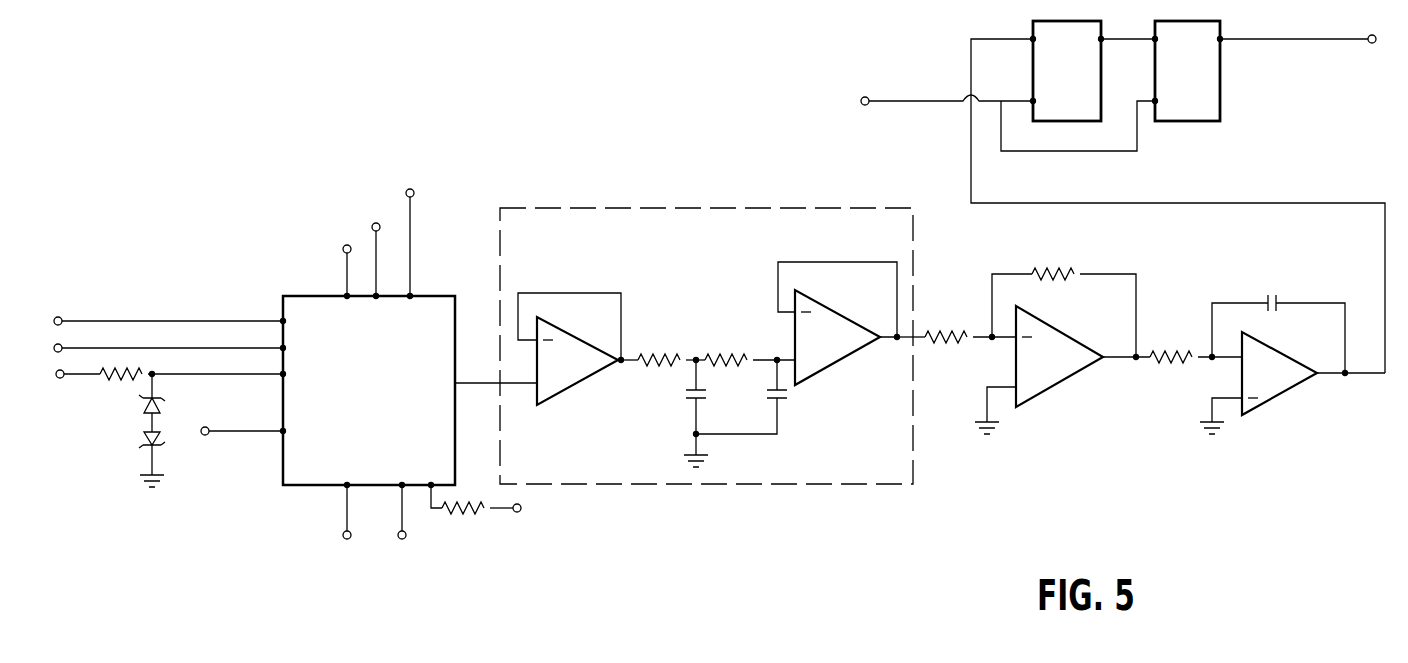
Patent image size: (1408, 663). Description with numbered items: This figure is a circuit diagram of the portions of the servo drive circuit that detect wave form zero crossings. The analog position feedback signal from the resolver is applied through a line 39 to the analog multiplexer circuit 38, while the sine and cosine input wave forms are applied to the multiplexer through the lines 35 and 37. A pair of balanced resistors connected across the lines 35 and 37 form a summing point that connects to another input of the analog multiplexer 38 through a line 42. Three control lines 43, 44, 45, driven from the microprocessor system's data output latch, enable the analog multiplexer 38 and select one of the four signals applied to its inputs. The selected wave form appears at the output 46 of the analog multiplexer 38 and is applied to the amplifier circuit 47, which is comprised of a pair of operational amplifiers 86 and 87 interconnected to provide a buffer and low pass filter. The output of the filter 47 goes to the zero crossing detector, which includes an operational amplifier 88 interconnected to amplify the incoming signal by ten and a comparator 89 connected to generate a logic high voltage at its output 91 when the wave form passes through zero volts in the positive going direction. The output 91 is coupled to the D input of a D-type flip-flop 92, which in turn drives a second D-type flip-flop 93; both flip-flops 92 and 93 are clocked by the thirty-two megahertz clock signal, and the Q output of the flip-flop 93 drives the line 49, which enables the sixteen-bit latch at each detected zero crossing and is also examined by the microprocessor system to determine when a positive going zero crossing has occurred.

The line 35 is at (57, 317).
The line 37 is at (55, 350).
The analog multiplexer circuit 38 is at (302, 492).
The line 39 is at (63, 376).
The line 42 is at (205, 435).
The control line 43 is at (407, 190).
The control line 44 is at (376, 222).
The control line 45 is at (347, 245).
The output 46 is at (460, 382).
The amplifier circuit 47 is at (595, 207).
The line 49 is at (1372, 45).
The operational amplifier 86 is at (580, 374).
The operational amplifier 87 is at (838, 348).
The operational amplifier 88 is at (1056, 364).
The comparator 89 is at (1280, 383).
The output 91 is at (1381, 272).
The D-type flip-flop 92 is at (1080, 84).
The second D-type flip-flop 93 is at (1197, 82).